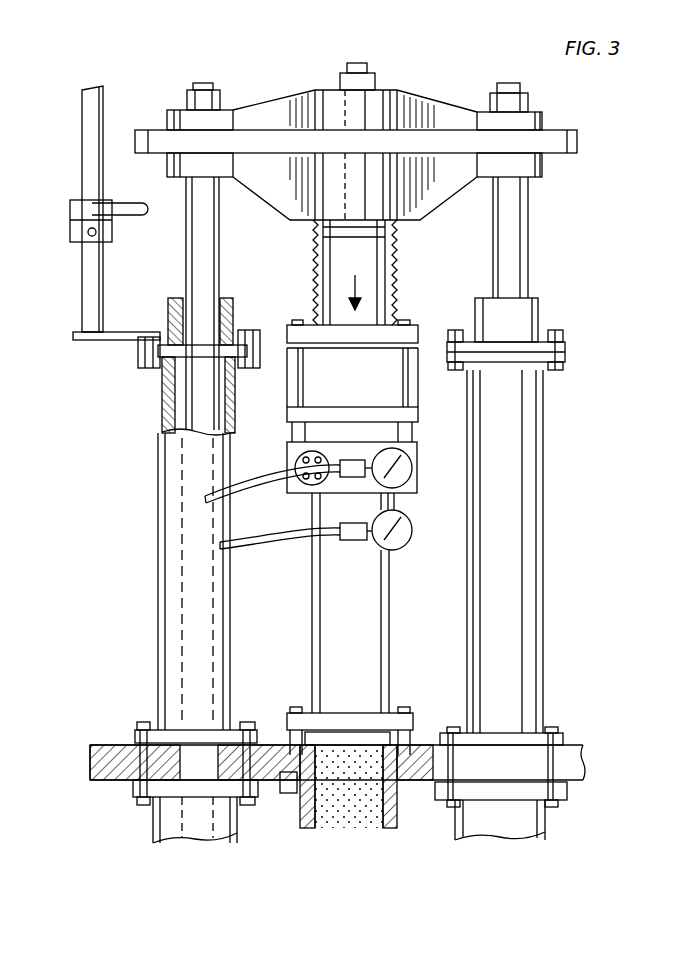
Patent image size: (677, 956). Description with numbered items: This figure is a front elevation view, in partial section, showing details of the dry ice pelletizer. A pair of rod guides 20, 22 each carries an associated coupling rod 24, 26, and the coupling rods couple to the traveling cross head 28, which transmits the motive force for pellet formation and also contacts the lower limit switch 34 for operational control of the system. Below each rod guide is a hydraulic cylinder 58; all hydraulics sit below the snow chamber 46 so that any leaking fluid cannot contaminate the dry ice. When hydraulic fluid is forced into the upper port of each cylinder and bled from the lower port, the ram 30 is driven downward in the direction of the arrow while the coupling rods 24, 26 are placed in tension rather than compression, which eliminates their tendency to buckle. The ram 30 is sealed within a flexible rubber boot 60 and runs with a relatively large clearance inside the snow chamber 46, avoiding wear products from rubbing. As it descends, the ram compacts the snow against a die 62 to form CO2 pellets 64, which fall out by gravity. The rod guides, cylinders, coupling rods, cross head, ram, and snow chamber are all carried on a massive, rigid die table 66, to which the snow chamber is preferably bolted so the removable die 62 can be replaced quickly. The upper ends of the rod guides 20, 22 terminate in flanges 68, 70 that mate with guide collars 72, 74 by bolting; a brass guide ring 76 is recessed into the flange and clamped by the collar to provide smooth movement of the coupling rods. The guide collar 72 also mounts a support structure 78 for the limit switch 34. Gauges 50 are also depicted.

The rod guide 20 is at (160, 470).
The rod guide 22 is at (543, 485).
The coupling rod 24 is at (208, 233).
The coupling rod 26 is at (528, 236).
The cross head 28 is at (432, 105).
The ram 30 is at (398, 246).
The lower limit switch 34 is at (135, 205).
The snow chamber 46 is at (392, 618).
The pressure gauges 50 is at (404, 543).
The hydraulic cylinder 58 is at (155, 827).
The flexible rubber boot 60 is at (398, 280).
The die 62 is at (318, 714).
The CO2 pellets 64 is at (333, 822).
The die table 66 is at (573, 762).
The flange 68 is at (138, 355).
The flange 70 is at (565, 355).
The guide collar 72 is at (175, 298).
The guide collar 74 is at (537, 315).
The guide ring 76 is at (232, 340).
The support structure 78 is at (82, 278).